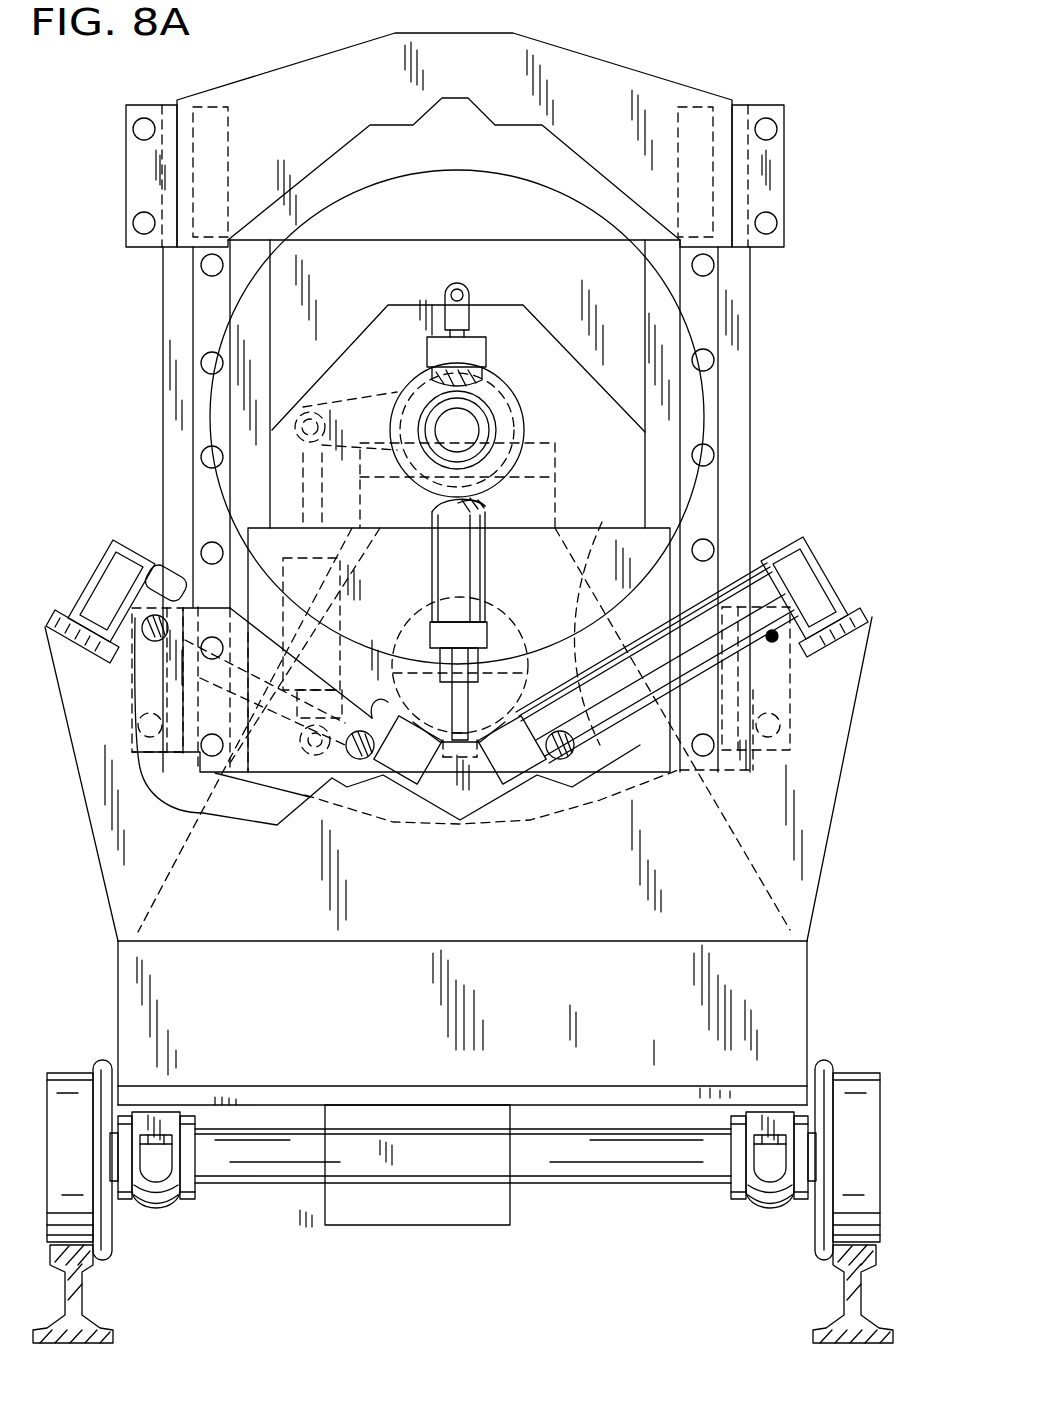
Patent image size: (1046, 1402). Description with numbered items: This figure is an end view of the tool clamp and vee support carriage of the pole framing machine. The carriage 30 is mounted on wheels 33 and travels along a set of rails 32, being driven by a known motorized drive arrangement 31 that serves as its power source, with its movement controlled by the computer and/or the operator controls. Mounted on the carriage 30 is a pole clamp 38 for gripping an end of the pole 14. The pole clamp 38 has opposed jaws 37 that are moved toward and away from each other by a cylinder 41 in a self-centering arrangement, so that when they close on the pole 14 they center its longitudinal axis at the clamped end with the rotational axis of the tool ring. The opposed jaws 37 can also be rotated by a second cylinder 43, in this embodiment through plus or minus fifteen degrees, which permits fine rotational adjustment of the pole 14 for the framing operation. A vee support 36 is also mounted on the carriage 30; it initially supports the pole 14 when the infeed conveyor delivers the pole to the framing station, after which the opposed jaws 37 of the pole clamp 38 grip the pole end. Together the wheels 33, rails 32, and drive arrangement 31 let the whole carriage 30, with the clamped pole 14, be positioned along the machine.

The carriage 30 is at (724, 75).
The opposed jaws 37 is at (578, 163).
The pole clamp 38 is at (737, 303).
The pole 14 is at (712, 422).
The cylinder 43 is at (340, 617).
The cylinder 41 is at (485, 553).
The vee support 36 is at (818, 552).
The motorized drive arrangement 31 is at (510, 1207).
The wheels 33 is at (72, 1073).
The rails 32 is at (75, 1297).